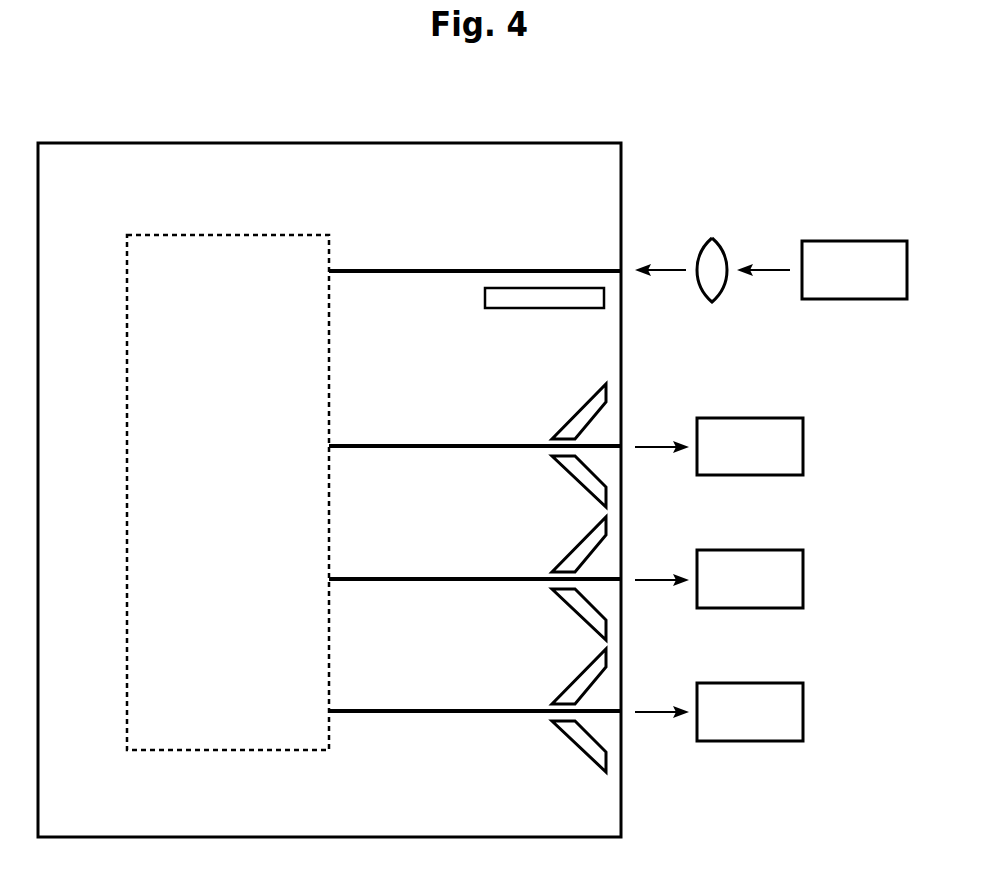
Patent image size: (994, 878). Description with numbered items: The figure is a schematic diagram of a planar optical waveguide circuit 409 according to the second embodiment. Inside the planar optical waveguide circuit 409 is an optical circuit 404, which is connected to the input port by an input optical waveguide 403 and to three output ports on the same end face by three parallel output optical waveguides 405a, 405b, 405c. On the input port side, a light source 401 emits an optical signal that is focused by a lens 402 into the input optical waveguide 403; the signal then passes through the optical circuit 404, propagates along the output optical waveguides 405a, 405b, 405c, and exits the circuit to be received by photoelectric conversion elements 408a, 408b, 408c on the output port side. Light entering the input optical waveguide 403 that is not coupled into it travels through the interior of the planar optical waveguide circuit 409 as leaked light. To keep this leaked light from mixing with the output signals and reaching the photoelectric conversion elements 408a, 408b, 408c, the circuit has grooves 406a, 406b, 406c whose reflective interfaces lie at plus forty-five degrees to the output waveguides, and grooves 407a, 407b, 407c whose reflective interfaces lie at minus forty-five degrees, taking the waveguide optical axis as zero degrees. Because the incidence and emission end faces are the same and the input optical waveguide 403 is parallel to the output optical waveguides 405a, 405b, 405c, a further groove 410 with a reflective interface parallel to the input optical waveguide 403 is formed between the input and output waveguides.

The light source 401 is at (888, 241).
The lens 402 is at (720, 238).
The input optical waveguide 403 is at (472, 269).
The optical circuit 404 is at (316, 234).
The output optical waveguide 405a is at (365, 445).
The output optical waveguide 405b is at (365, 578).
The output optical waveguide 405c is at (365, 710).
The groove 406a is at (572, 406).
The groove 406b is at (572, 539).
The groove 406c is at (572, 672).
The groove 407a is at (570, 483).
The groove 407b is at (570, 616).
The groove 407c is at (570, 749).
The photoelectric conversion element 408a is at (783, 417).
The photoelectric conversion element 408b is at (783, 550).
The photoelectric conversion element 408c is at (783, 683).
The planar optical waveguide circuit 409 is at (597, 142).
The groove 410 is at (485, 297).